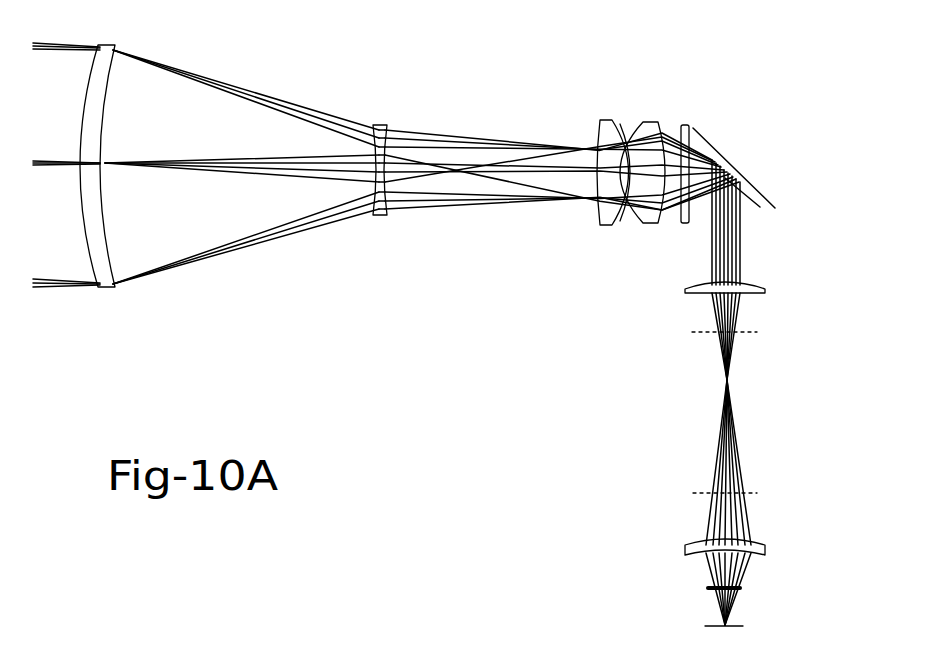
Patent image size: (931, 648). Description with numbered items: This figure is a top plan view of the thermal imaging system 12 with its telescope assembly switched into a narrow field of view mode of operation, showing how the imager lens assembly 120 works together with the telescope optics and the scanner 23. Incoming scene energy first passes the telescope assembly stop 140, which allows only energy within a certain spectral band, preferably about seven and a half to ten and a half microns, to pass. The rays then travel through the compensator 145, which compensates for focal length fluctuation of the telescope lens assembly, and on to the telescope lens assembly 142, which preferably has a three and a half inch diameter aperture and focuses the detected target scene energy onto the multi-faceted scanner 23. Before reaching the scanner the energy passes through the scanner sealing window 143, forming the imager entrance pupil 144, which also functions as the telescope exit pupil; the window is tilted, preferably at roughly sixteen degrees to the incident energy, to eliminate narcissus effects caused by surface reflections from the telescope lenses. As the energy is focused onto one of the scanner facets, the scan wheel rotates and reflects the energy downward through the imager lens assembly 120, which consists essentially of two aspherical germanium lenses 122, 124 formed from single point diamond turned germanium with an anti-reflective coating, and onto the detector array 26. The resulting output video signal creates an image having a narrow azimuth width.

The thermal imaging system 12 is at (502, 88).
The scanner 23 is at (795, 205).
The detector array 26 is at (725, 628).
The imager lens assembly 120 is at (652, 398).
The aspherical germanium lens 122 is at (685, 292).
The aspherical germanium lens 124 is at (685, 548).
The telescope assembly stop 140 is at (110, 289).
The telescope lens assembly 142 is at (636, 110).
The scanner sealing window 143 is at (686, 123).
The imager entrance pupil 144 is at (708, 138).
The compensator 145 is at (380, 125).